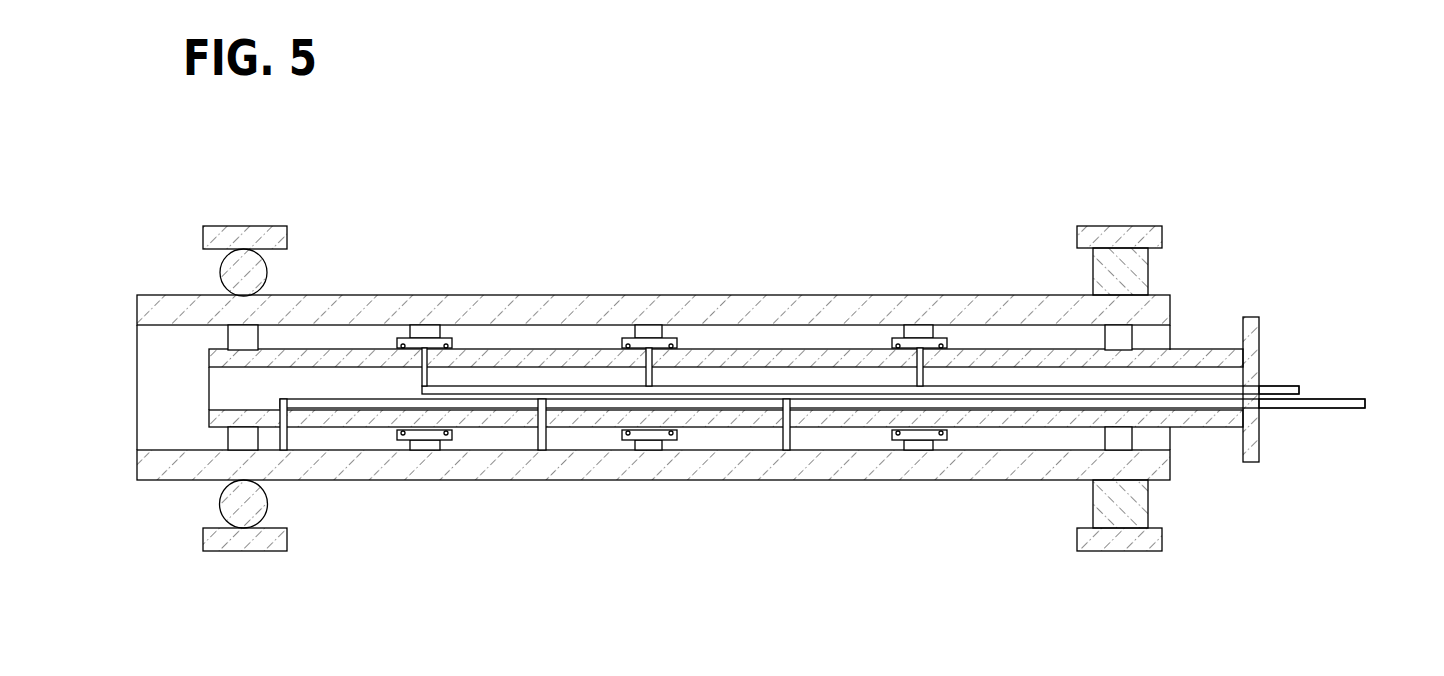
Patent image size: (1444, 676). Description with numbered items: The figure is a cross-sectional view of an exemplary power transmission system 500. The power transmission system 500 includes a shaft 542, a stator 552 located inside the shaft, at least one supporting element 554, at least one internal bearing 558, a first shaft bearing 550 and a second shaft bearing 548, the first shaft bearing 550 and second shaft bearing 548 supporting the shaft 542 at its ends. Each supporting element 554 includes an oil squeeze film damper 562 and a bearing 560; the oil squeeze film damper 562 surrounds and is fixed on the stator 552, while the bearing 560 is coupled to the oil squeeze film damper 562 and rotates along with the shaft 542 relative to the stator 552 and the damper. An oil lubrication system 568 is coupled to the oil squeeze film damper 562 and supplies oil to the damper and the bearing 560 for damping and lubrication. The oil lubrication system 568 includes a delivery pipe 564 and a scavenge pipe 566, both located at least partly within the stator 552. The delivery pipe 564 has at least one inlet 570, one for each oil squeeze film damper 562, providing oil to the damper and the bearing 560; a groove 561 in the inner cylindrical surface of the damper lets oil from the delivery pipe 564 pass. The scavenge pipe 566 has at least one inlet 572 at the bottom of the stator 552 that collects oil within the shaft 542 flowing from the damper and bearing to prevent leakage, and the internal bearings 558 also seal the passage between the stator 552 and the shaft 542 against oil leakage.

The power transmission system 500 is at (996, 166).
The shaft 542 is at (720, 295).
The second shaft bearing 548 is at (1148, 272).
The first shaft bearing 550 is at (268, 272).
The stator 552 is at (1190, 349).
The supporting element 554 is at (495, 517).
The internal bearing 558 is at (228, 438).
The bearing 560 is at (447, 434).
The groove 561 is at (676, 430).
The oil squeeze film damper 562 is at (450, 431).
The delivery pipe 564 is at (1277, 386).
The scavenge pipe 566 is at (1300, 409).
The oil lubrication system 568 is at (1367, 348).
The inlet 570 is at (428, 388).
The inlet 572 is at (790, 437).